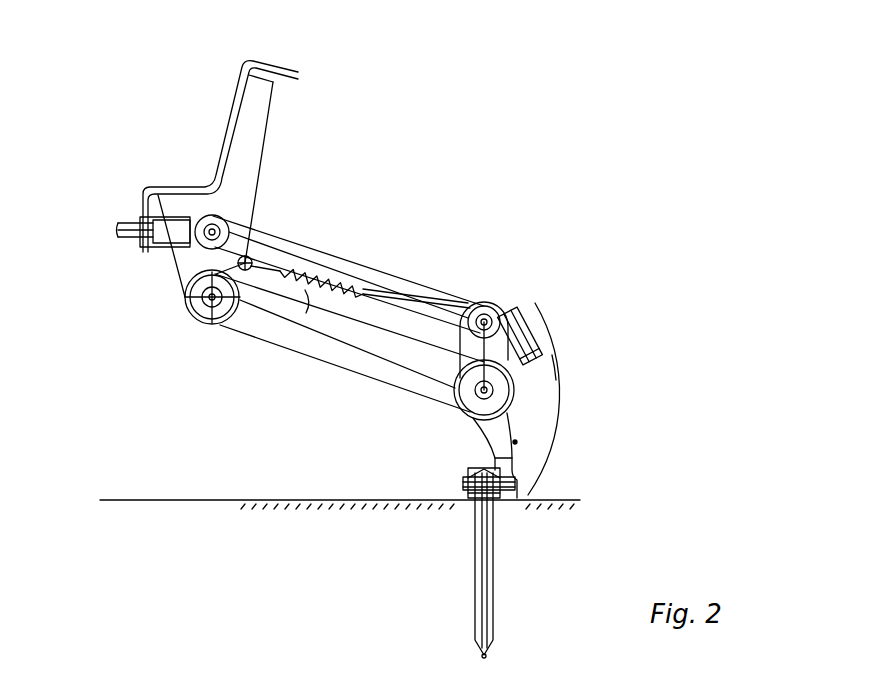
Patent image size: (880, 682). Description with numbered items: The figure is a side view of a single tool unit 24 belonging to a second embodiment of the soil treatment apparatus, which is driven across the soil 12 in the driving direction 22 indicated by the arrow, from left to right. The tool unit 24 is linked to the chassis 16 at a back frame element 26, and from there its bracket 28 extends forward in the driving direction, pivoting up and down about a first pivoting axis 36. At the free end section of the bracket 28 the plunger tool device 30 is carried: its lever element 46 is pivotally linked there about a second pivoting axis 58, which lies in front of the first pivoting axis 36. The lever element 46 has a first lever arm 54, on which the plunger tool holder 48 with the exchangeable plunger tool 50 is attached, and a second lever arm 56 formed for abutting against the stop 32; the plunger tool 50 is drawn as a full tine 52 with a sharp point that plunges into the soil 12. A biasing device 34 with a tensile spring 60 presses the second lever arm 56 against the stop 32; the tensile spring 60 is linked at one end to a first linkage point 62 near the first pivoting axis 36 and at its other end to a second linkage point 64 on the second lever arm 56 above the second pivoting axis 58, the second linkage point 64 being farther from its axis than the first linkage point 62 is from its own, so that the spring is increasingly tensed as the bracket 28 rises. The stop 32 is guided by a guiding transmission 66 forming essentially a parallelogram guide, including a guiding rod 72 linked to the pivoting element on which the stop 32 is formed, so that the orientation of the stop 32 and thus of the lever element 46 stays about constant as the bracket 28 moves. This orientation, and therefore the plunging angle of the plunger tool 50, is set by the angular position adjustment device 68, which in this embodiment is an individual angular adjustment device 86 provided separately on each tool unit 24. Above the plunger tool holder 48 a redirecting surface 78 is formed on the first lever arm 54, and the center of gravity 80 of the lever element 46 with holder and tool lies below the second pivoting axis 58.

The soil 12 is at (198, 500).
The machine frame or chassis 16 is at (214, 106).
The driving direction 22 is at (602, 140).
The tool unit 24 is at (438, 156).
The back frame element 26 is at (184, 194).
The bracket 28 is at (333, 357).
The plunger tool device 30 is at (590, 366).
The stop 32 is at (543, 328).
The biasing device 34 is at (318, 255).
The first pivoting axis 36 is at (212, 325).
The lever element 46 is at (572, 420).
The plunger tool holder 48 is at (457, 490).
The plunger tool 50 is at (536, 565).
The stake 52 is at (495, 587).
The first lever arm 54 is at (522, 476).
The second lever arm 56 is at (548, 350).
The second pivoting axis 58 is at (485, 390).
The tensile spring 60 is at (307, 302).
The first linkage point 62 is at (251, 260).
The second linkage point 64 is at (506, 305).
The guiding transmission 66 is at (405, 258).
The angular position adjustment device 68 is at (87, 370).
The guiding rod 72 is at (332, 264).
The redirecting surface 78 is at (494, 451).
The center of gravity 80 is at (530, 444).
The individual angular adjustment device 86 is at (131, 272).